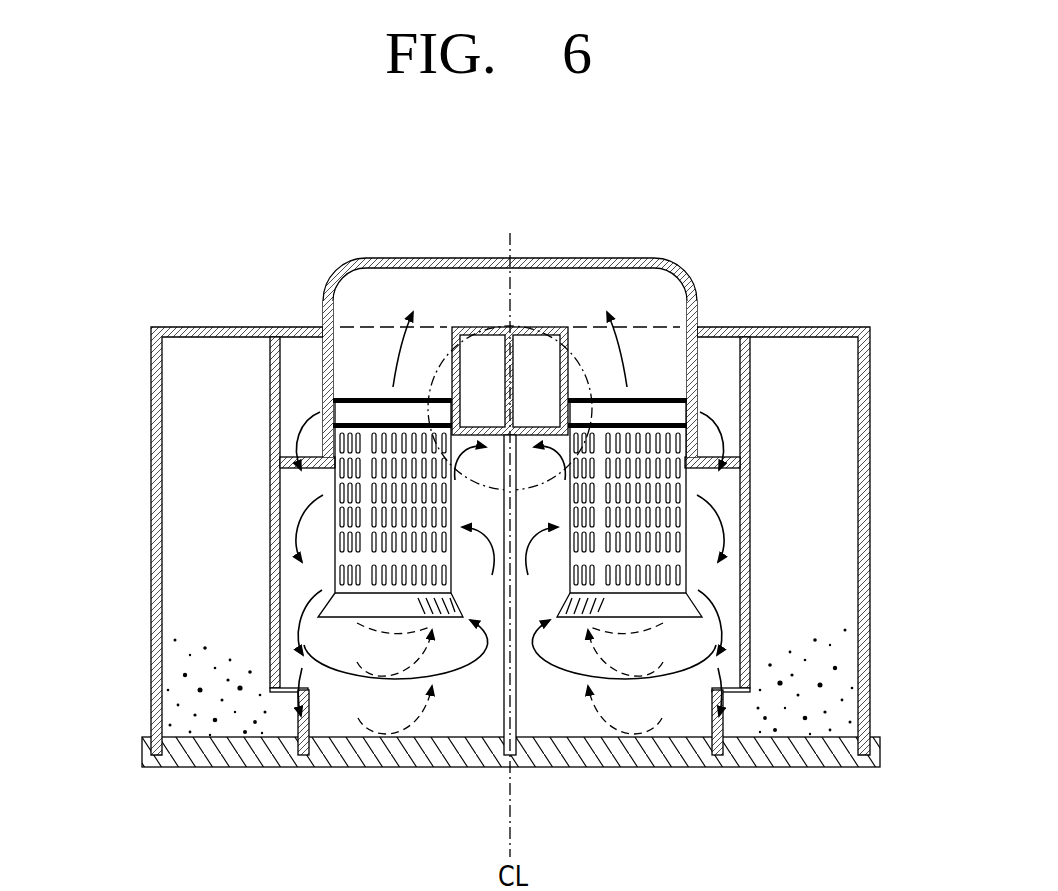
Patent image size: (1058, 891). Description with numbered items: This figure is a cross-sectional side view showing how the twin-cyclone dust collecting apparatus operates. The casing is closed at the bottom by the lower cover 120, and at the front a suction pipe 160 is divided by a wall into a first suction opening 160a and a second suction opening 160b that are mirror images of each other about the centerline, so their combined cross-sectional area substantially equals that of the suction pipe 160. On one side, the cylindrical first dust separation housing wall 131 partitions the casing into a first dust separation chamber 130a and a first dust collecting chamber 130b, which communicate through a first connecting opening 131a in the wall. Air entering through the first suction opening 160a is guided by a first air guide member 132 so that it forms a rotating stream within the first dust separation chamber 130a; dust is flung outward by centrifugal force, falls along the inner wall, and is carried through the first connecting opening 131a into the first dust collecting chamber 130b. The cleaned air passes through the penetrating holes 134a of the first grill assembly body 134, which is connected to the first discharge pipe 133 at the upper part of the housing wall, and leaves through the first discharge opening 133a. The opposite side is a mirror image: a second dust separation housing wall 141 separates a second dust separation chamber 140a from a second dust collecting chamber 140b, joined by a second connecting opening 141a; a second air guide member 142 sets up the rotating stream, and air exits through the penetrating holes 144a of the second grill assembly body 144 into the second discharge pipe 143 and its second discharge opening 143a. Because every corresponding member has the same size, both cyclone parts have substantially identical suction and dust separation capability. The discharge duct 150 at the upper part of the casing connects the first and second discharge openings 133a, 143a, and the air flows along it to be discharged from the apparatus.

The lower cover 120 is at (843, 764).
The first dust separation chamber 130a is at (723, 590).
The first dust collecting chamber 130b is at (814, 674).
The first dust separation housing wall 131 is at (750, 515).
The first connecting opening 131a is at (720, 727).
The first air guide member 132 is at (738, 437).
The first discharge pipe 133 is at (693, 363).
The first discharge opening 133a is at (652, 342).
The first grill assembly body 134 is at (703, 537).
The penetrating holes 134a is at (690, 480).
The second dust separation chamber 140a is at (295, 612).
The second dust collecting chamber 140b is at (199, 676).
The second dust separation housing wall 141 is at (273, 572).
The second connecting opening 141a is at (297, 724).
The second air guide member 142 is at (290, 460).
The second discharge pipe 143 is at (330, 372).
The second discharge opening 143a is at (383, 340).
The second grill assembly body 144 is at (323, 530).
The penetrating holes 144a is at (323, 497).
The discharge duct 150 is at (603, 257).
The suction pipe 160 is at (432, 377).
The first suction opening 160a is at (547, 374).
The second suction opening 160b is at (487, 374).